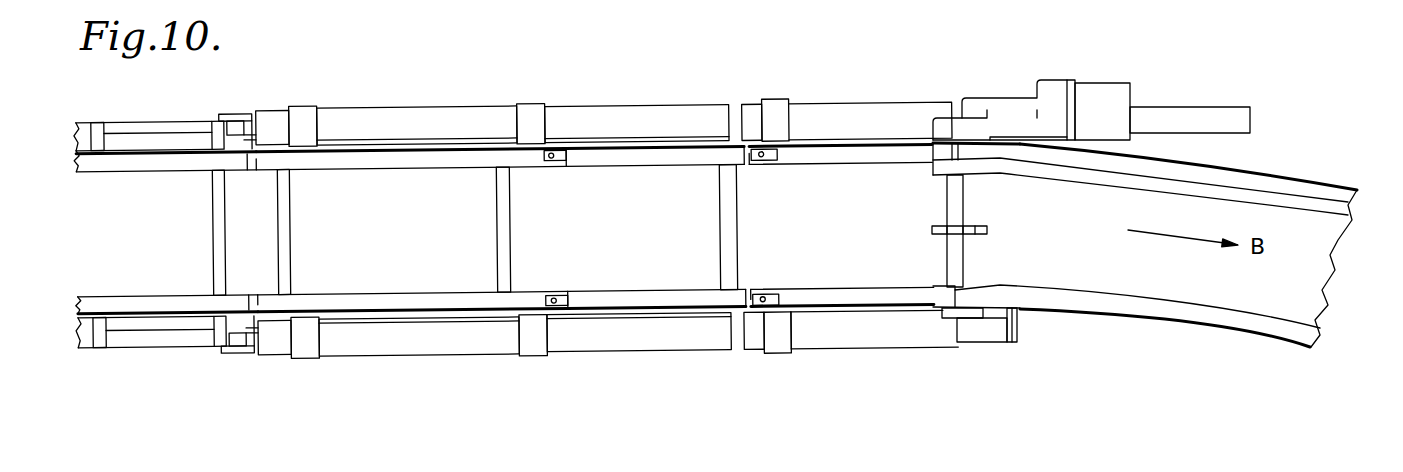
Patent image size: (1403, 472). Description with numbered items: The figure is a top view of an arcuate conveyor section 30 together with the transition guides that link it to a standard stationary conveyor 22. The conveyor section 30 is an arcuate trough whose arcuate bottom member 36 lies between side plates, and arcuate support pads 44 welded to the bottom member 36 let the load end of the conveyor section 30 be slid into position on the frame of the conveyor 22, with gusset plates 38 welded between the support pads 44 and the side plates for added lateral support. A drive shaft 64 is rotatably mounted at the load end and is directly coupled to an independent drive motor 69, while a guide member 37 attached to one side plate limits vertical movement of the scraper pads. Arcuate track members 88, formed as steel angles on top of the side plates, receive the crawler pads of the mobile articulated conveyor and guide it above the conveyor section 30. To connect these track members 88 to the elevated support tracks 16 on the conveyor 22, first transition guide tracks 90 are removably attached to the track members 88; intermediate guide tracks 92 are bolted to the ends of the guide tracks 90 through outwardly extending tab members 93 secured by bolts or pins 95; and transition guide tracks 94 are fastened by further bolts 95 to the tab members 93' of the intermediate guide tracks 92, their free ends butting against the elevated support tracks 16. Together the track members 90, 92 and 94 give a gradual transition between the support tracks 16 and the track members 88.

The elevated support tracks 16 is at (177, 305).
The first stationary conveyor 22 is at (157, 340).
The conveyor section 30 is at (1152, 340).
The arcuate bottom member 36 is at (1068, 262).
The guide member 37 is at (1252, 190).
The gusset plates 38 is at (1020, 327).
The arcuate support pads 44 is at (987, 333).
The drive shafts 64 is at (960, 212).
The drive motors 69 is at (1095, 113).
The arcuate track members 88 is at (1313, 188).
The first transition guide tracks 90 is at (877, 160).
The intermediate guide tracks 92 is at (655, 157).
The tab member 93 is at (788, 227).
The tab member 93' is at (555, 227).
The transition guide tracks 94 is at (392, 302).
The bolts or pins 95 is at (550, 156).